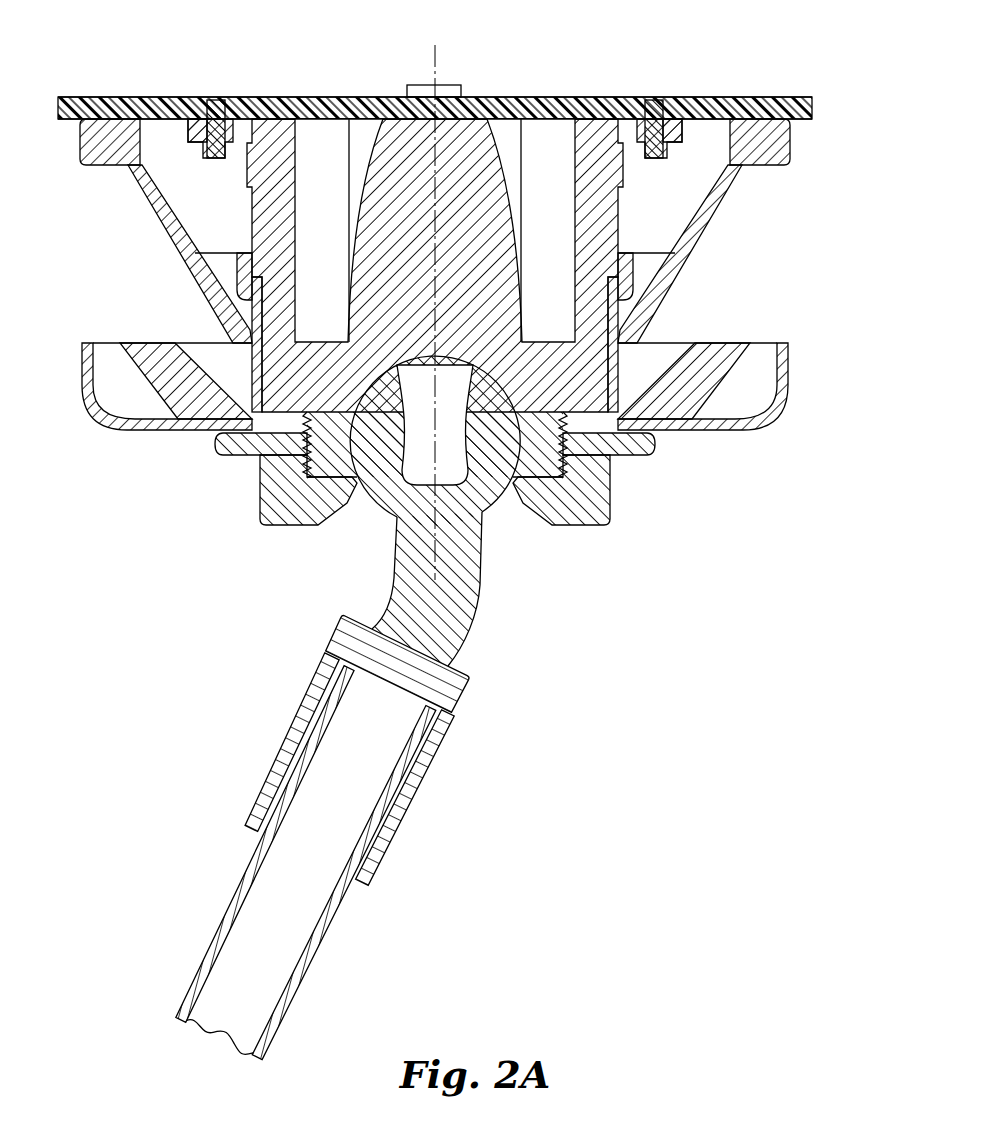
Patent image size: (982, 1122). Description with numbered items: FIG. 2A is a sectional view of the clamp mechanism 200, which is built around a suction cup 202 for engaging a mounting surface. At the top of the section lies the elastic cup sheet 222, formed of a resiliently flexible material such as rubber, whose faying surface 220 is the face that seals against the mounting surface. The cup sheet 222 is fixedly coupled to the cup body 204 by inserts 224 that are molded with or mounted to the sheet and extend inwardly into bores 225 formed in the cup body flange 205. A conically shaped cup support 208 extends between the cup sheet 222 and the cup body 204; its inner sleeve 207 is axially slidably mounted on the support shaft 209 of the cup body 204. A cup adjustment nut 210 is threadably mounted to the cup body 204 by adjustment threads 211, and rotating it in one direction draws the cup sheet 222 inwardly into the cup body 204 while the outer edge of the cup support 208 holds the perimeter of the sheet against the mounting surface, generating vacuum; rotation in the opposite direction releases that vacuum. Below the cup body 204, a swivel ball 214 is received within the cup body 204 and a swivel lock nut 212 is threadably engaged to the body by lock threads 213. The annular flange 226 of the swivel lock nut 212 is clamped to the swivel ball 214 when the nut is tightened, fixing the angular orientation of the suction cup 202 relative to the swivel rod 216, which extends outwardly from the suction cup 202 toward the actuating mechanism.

The clamp mechanism 200 is at (793, 78).
The suction cup 202 is at (447, 85).
The cup body 204 is at (388, 147).
The cup body flange 205 is at (177, 122).
The inner sleeve 207 is at (240, 272).
The cup support 208 is at (720, 197).
The support shaft 209 is at (255, 203).
The cup adjustment nut 210 is at (780, 403).
The adjustment threads 211 is at (615, 385).
The swivel lock nut 212 is at (593, 527).
The lock threads 213 is at (583, 457).
The swivel ball 214 is at (500, 505).
The swivel rod 216 is at (205, 955).
The faying surface 220 is at (743, 97).
The cup sheet 222 is at (92, 100).
The insert 224 is at (213, 122).
The bore 225 is at (240, 122).
The annular flange 226 is at (338, 507).